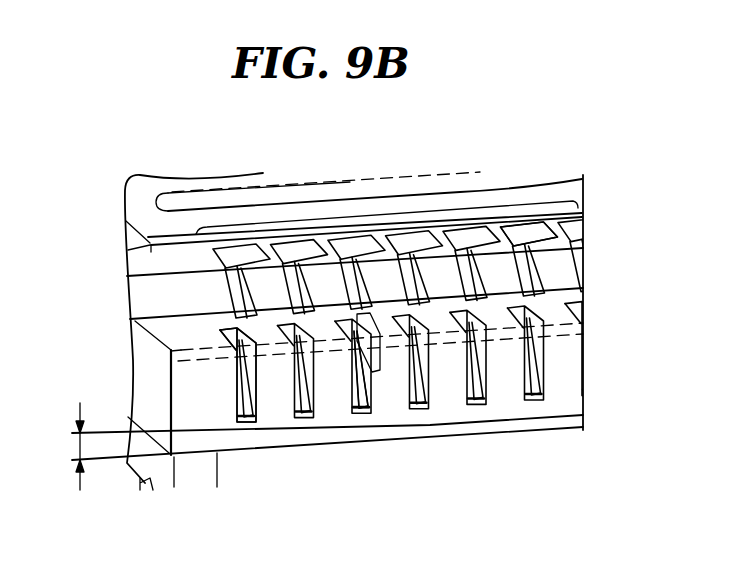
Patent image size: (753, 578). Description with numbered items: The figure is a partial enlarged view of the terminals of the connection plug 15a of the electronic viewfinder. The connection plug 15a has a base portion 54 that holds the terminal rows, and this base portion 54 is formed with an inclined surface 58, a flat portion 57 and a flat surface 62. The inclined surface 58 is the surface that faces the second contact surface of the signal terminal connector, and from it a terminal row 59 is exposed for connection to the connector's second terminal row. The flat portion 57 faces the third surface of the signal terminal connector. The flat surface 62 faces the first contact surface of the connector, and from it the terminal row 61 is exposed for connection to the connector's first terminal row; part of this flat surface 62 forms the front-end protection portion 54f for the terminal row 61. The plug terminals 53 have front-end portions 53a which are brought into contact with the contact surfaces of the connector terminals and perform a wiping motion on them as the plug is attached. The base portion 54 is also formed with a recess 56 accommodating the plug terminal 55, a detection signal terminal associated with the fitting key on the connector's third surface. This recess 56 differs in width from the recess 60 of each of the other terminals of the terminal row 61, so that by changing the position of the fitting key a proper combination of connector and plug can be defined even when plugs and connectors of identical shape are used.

The connection plug 15a is at (559, 159).
The plug terminal 53 is at (468, 279).
The front-end portion 53a is at (578, 232).
The base portion 54 is at (503, 431).
The front-end protection portion 54f is at (54, 446).
The plug terminal 55 is at (358, 340).
The recess 56 is at (380, 372).
The flat portion 57 is at (170, 330).
The inclined surface 58 is at (150, 293).
The terminal row 59 is at (415, 216).
The recess 60 is at (250, 414).
The terminal row 61 is at (410, 428).
The flat surface 62 is at (200, 408).